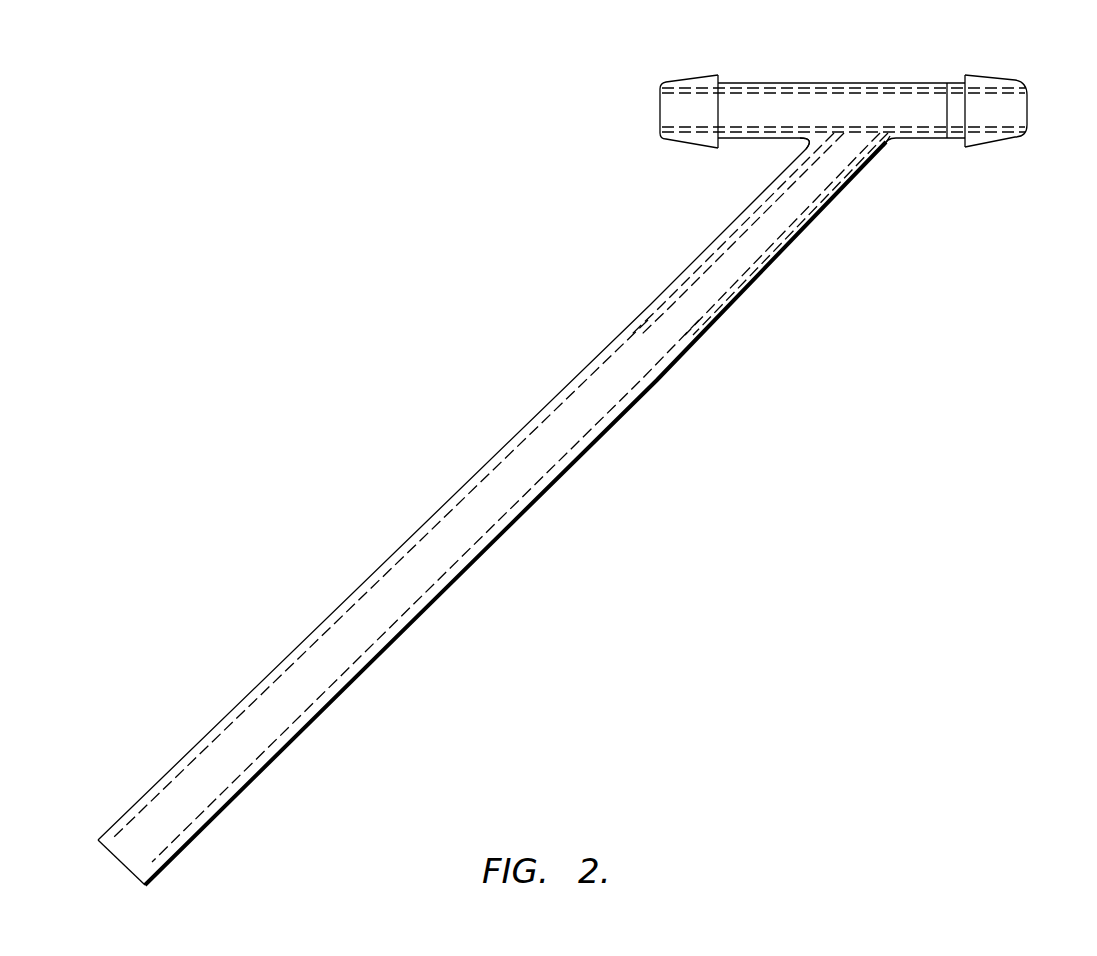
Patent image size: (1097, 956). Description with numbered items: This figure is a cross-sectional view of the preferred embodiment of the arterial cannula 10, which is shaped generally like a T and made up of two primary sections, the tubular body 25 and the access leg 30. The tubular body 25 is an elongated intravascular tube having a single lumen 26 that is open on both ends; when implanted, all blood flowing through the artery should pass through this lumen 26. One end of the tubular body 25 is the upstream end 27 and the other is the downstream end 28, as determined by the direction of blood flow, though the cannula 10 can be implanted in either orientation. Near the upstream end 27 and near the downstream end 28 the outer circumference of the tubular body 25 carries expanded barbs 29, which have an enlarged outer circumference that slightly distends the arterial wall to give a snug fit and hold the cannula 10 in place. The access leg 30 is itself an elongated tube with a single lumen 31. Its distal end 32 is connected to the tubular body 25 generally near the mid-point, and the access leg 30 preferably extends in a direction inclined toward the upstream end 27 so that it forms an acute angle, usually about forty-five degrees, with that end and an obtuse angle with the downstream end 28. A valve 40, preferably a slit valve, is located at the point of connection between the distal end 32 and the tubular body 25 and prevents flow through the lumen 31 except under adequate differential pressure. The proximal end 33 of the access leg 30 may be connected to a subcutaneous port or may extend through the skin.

The arterial cannula 10 is at (598, 77).
The tubular body 25 is at (913, 57).
The lumen 26 is at (808, 102).
The upstream end 27 is at (660, 138).
The downstream end 28 is at (1008, 142).
The expanded barbs 29 is at (716, 74).
The access leg 30 is at (784, 250).
The lumen 31 is at (738, 268).
The distal end 32 is at (889, 138).
The proximal end 33 is at (148, 872).
The valve 40 is at (818, 151).